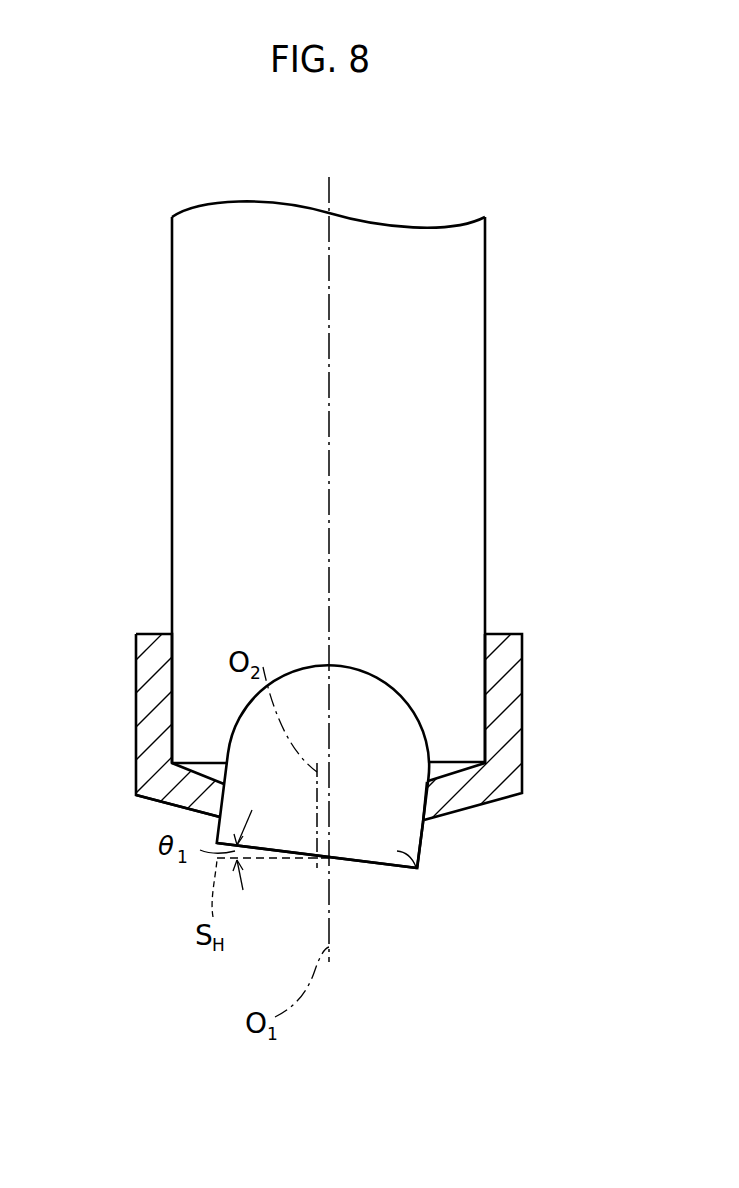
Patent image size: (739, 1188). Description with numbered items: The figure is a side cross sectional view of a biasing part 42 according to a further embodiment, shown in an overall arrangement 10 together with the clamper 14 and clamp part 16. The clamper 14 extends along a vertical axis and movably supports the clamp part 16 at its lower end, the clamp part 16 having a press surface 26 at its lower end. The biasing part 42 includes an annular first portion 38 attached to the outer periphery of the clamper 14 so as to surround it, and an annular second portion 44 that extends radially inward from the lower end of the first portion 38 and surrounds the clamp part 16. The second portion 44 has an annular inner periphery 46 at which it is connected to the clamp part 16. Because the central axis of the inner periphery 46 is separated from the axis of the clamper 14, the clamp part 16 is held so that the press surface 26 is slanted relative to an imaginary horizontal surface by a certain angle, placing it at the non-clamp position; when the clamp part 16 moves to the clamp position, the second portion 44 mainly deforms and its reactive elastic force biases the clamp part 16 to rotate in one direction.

The assembly 10 is at (553, 167).
The clamper 14 is at (462, 408).
The clamp part 16 is at (417, 871).
The press surface 26 is at (372, 868).
The first portion 38 is at (148, 658).
The biasing part 42 is at (523, 672).
The second portion 44 is at (190, 798).
The inner periphery 46 is at (423, 800).